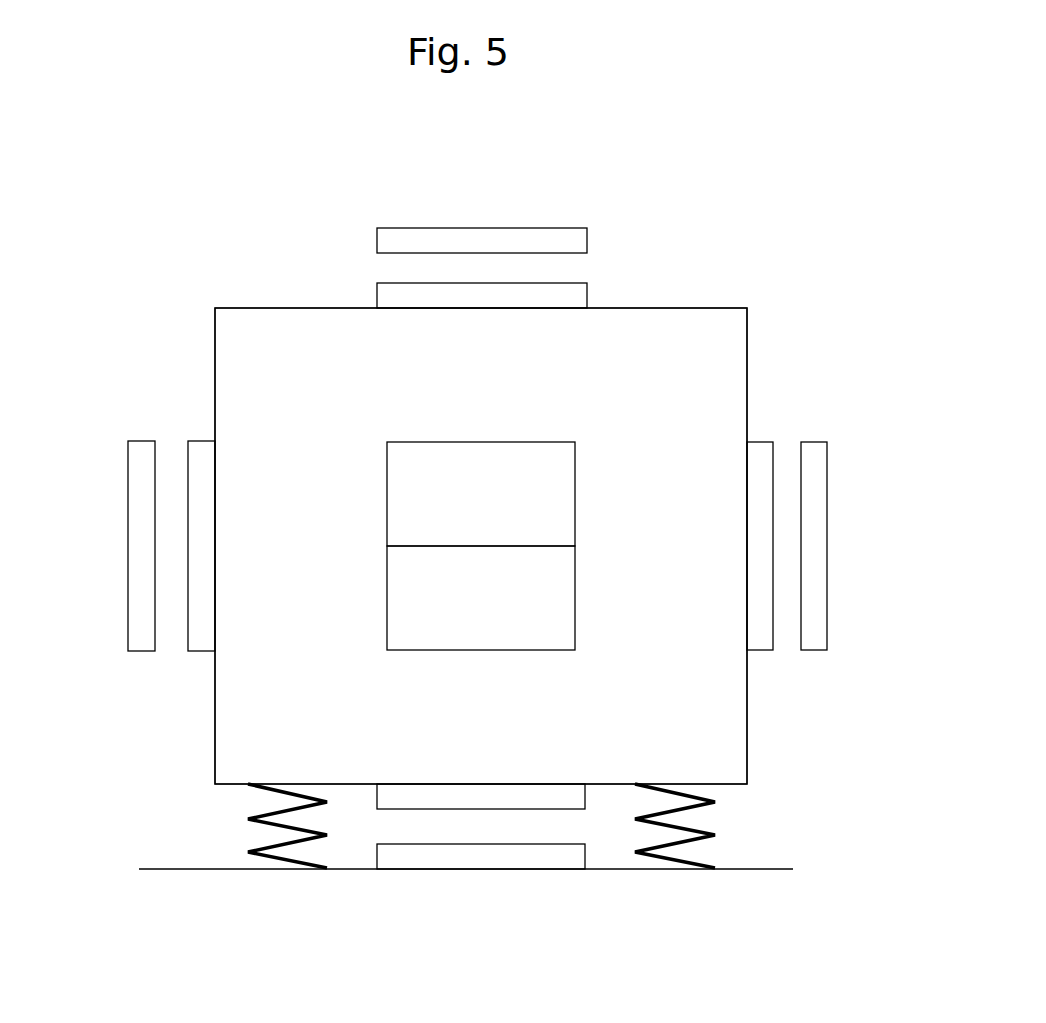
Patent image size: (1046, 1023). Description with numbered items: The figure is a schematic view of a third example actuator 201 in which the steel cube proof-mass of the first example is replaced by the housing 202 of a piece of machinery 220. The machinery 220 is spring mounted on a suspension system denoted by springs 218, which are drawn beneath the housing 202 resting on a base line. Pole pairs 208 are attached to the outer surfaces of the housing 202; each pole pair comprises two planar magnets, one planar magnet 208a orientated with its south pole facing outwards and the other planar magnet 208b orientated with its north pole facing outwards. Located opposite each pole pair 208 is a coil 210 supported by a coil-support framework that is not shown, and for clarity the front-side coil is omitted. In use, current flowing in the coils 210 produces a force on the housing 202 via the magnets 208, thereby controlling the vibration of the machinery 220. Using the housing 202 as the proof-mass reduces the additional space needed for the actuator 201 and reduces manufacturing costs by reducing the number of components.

The actuator 201 is at (218, 182).
The housing 202 is at (641, 722).
The pole pairs 208 is at (520, 295).
The planar magnet 208a is at (408, 503).
The planar magnet 208b is at (550, 600).
The coil 210 is at (421, 242).
The springs 218 is at (284, 845).
The machinery 220 is at (663, 334).